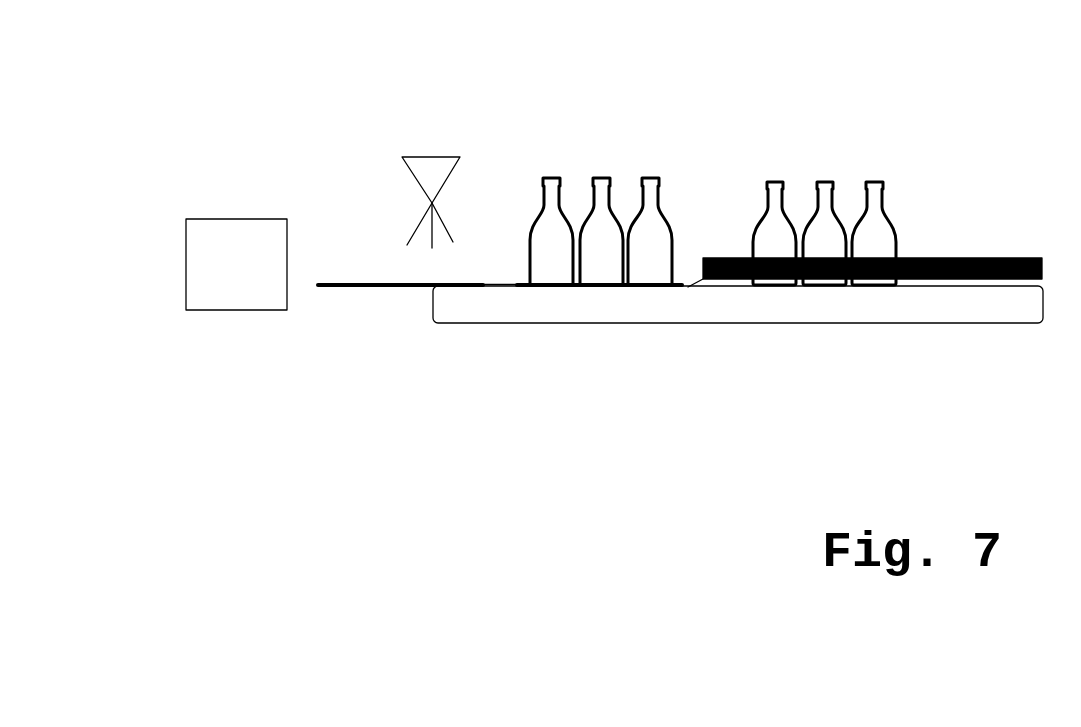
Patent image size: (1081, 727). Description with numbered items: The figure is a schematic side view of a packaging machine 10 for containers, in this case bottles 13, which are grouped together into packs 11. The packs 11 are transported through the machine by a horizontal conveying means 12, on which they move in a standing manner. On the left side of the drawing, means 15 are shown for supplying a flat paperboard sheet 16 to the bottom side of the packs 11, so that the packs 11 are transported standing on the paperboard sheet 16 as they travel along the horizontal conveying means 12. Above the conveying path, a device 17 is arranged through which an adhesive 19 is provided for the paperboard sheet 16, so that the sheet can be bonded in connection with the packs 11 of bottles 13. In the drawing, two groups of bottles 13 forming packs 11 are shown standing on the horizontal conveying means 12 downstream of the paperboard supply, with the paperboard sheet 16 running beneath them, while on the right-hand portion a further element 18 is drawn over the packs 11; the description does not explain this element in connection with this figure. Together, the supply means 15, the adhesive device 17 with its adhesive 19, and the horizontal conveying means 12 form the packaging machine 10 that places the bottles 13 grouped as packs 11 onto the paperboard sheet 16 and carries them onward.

The packaging machine 10 is at (590, 463).
The packs 11 is at (655, 157).
The horizontal conveying means 12 is at (1030, 323).
The bottles 13 is at (547, 272).
The means for supplying flat paperboard sheet 15 is at (278, 307).
The paperboard sheet 16 is at (400, 287).
The device 17 is at (437, 157).
The cover film 18 is at (942, 257).
The adhesive 19 is at (414, 228).